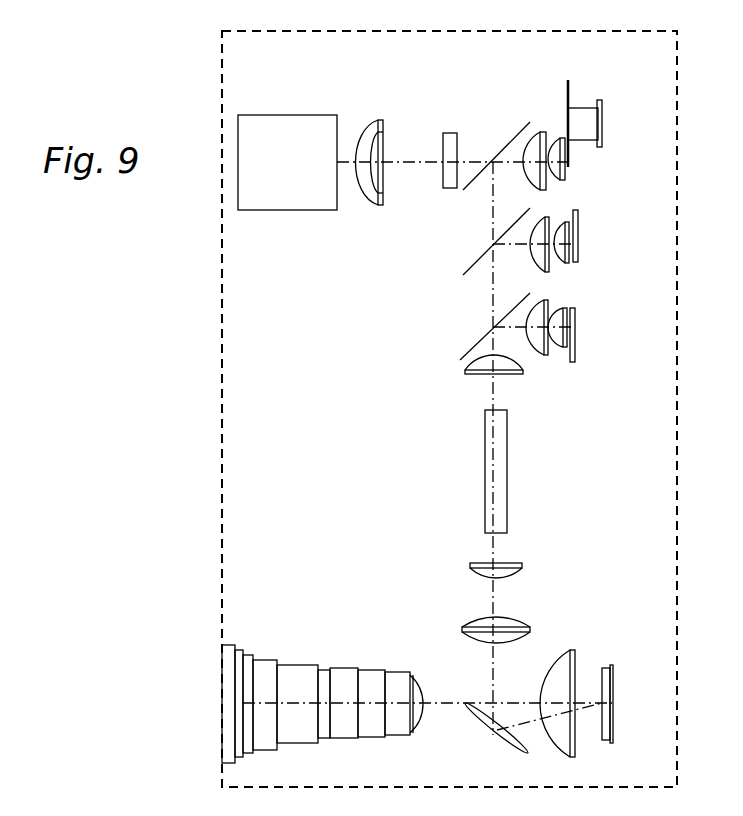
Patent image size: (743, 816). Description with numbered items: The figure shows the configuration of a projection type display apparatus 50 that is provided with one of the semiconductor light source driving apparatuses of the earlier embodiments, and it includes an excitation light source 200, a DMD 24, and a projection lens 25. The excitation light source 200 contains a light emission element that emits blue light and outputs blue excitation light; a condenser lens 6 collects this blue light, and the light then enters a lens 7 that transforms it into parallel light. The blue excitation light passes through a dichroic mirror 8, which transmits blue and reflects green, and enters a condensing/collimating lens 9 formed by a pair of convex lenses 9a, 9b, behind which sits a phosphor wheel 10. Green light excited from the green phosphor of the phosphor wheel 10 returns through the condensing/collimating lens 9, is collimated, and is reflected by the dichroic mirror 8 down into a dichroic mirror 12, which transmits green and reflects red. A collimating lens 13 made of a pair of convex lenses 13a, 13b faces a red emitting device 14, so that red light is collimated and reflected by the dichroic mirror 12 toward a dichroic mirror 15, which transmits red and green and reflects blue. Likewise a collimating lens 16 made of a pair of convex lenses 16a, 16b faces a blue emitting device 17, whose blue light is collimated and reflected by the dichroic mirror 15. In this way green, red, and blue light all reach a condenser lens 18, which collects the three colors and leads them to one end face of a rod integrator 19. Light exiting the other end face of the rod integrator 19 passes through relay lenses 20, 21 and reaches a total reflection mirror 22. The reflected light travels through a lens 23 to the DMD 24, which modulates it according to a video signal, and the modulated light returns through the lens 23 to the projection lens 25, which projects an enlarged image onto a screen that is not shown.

The projection type display apparatus 50 is at (684, 218).
The excitation light source 200 is at (272, 211).
The condenser lens 6 is at (371, 206).
The lens 7 is at (450, 136).
The dichroic mirror 8 is at (503, 140).
The condensing/collimating lens 9 is at (544, 124).
The convex lens 9a is at (538, 130).
The convex lens 9b is at (564, 174).
The phosphor wheel 10 is at (577, 103).
The dichroic mirror 12 is at (470, 258).
The collimating lens 13 is at (561, 259).
The convex lens 13a is at (543, 264).
The convex lens 13b is at (572, 263).
The red emitting device 14 is at (580, 237).
The dichroic mirror 15 is at (462, 344).
The collimating lens 16 is at (562, 364).
The convex lens 16a is at (540, 351).
The convex lens 16b is at (560, 348).
The blue emitting device 17 is at (578, 347).
The condenser lens 18 is at (470, 374).
The rod integrator 19 is at (481, 458).
The relay lens 20 is at (525, 563).
The relay lens 21 is at (463, 627).
The total reflection mirror 22 is at (497, 734).
The lens 23 is at (566, 653).
The DMD 24 is at (613, 690).
The projection lens 25 is at (290, 675).